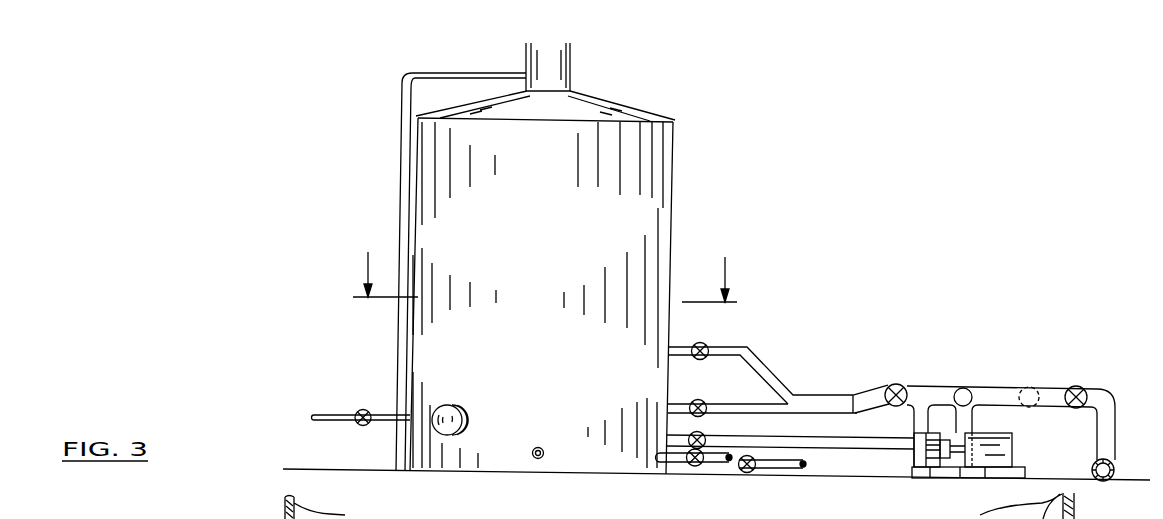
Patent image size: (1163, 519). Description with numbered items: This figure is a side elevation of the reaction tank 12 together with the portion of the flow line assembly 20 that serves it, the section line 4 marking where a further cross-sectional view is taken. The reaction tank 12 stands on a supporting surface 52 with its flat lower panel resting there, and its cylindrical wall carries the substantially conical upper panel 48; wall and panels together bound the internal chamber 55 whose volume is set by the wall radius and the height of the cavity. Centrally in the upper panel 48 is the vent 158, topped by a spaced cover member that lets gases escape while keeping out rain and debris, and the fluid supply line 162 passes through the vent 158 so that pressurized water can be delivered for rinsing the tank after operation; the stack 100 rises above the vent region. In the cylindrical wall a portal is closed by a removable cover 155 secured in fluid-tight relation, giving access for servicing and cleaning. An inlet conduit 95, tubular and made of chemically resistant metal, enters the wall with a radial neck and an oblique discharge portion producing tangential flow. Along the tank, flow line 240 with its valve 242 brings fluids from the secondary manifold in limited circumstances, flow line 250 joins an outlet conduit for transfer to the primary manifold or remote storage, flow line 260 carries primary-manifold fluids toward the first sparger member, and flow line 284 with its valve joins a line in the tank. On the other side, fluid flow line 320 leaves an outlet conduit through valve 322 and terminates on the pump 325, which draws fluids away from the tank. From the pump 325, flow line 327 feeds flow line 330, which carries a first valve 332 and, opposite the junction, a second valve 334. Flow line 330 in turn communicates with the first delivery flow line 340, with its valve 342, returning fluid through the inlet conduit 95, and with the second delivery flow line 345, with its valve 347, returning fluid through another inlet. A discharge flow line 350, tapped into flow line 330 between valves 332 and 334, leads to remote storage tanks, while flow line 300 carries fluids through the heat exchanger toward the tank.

The reaction tank 12 is at (656, 202).
The flow line assembly 20 is at (937, 326).
The upper panel 48 is at (597, 106).
The supporting surface 52 is at (347, 469).
The internal chamber 55 is at (372, 518).
The inlet conduit 95 is at (1073, 494).
The stack 100 is at (640, 40).
The removable cover 155 is at (446, 405).
The vent 158 is at (556, 62).
The fluid supply line 162 is at (468, 73).
The fluid flow line 240 is at (388, 413).
The valve 242 is at (354, 411).
The flow line 250 is at (538, 447).
The flow line 260 is at (673, 463).
The flow line 284 is at (768, 469).
The flow line 300 is at (1032, 378).
The fluid flow line 320 is at (808, 445).
The valve 322 is at (707, 436).
The pump 325 is at (934, 457).
The flow line 327 is at (926, 423).
The flow line 330 is at (943, 386).
The first valve 332 is at (888, 385).
The second valve 334 is at (1083, 386).
The first delivery flow line 340 is at (753, 348).
The valve 342 is at (706, 344).
The second delivery flow line 345 is at (760, 407).
The valve 347 is at (690, 403).
The discharge flow line 350 is at (974, 418).
The section line 4- 4 is at (545, 264).